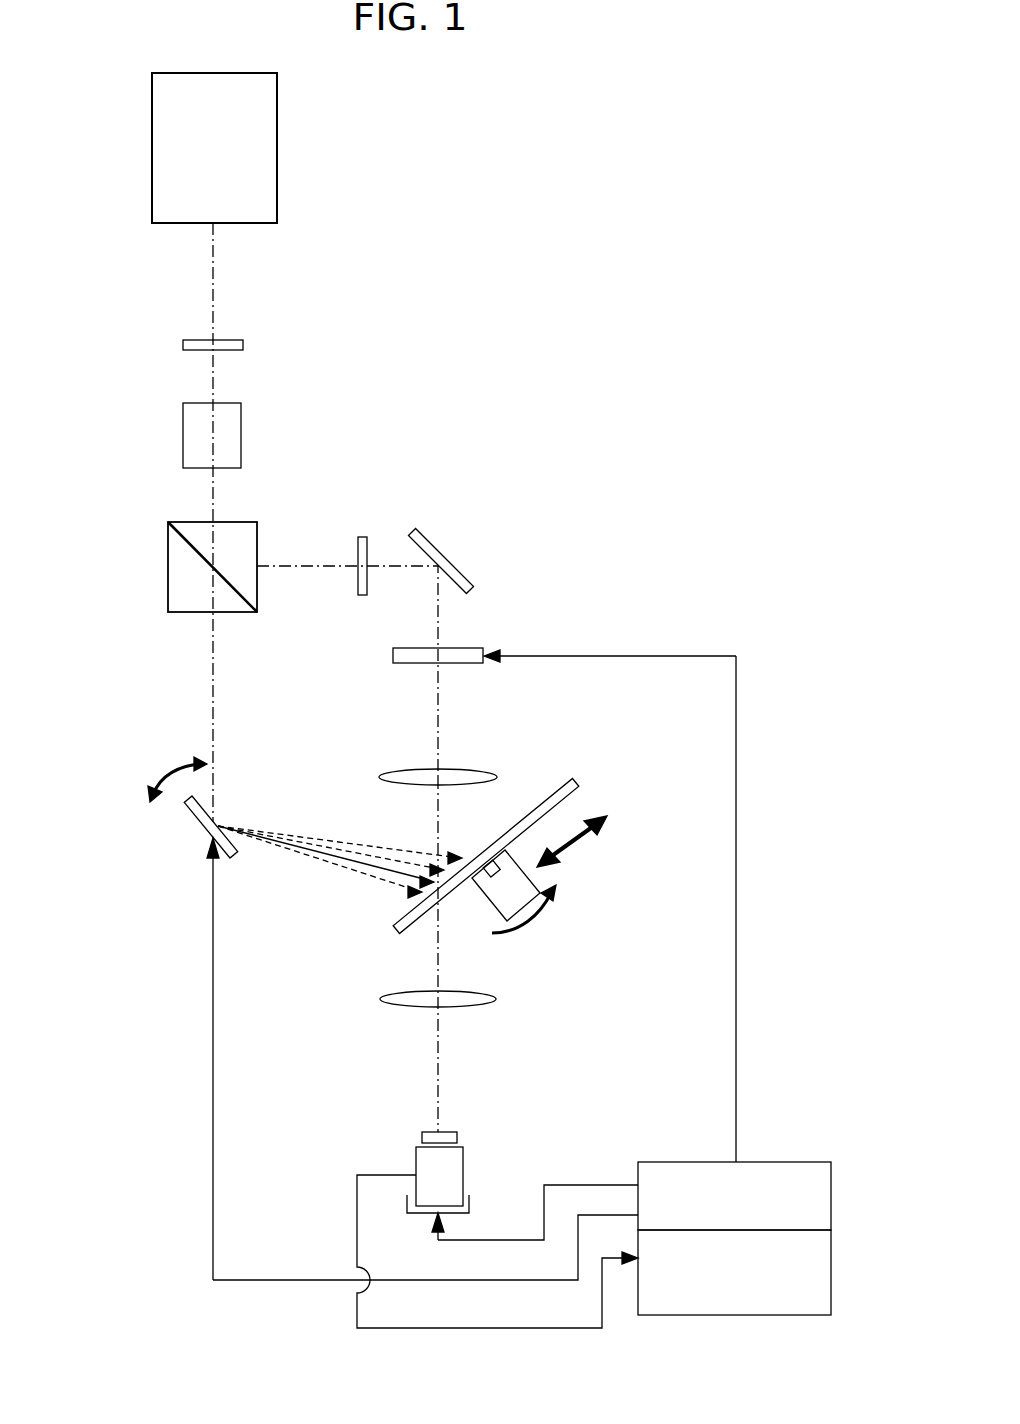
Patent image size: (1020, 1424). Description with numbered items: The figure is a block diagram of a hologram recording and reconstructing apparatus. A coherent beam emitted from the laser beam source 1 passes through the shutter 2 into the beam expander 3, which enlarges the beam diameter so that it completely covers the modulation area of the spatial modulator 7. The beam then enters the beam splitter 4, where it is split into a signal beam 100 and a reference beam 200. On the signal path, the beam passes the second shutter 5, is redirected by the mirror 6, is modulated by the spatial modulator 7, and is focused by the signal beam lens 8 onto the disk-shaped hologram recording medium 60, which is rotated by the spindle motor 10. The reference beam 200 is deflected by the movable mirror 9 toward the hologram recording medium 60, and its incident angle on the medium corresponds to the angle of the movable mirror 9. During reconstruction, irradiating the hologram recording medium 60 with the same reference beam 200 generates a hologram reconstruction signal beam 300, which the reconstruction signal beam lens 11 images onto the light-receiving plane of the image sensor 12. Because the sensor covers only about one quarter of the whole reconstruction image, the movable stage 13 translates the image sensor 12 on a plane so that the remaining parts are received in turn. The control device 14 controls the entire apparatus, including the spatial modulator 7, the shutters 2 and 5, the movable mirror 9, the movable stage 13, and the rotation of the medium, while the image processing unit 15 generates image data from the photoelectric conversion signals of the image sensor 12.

The laser beam source 1 is at (268, 128).
The shutter 2 is at (232, 343).
The beam expander 3 is at (192, 436).
The beam splitter 4 is at (256, 523).
The shutter 5 is at (364, 600).
The mirror 6 is at (452, 565).
The spatial modulator 7 is at (476, 652).
The signal beam lens 8 is at (466, 773).
The movable mirror 9 is at (200, 820).
The spindle motor 10 is at (537, 915).
The reconstruction signal beam lens 11 is at (396, 1000).
The image sensor 12 is at (455, 1155).
The movable stage 13 is at (472, 1198).
The control device 14 is at (773, 1168).
The image processing unit 15 is at (825, 1263).
The hologram recording medium 60 is at (575, 783).
The signal beam 100 is at (309, 565).
The reference beam 200 is at (213, 675).
The hologram reconstruction signal beam 300 is at (438, 966).